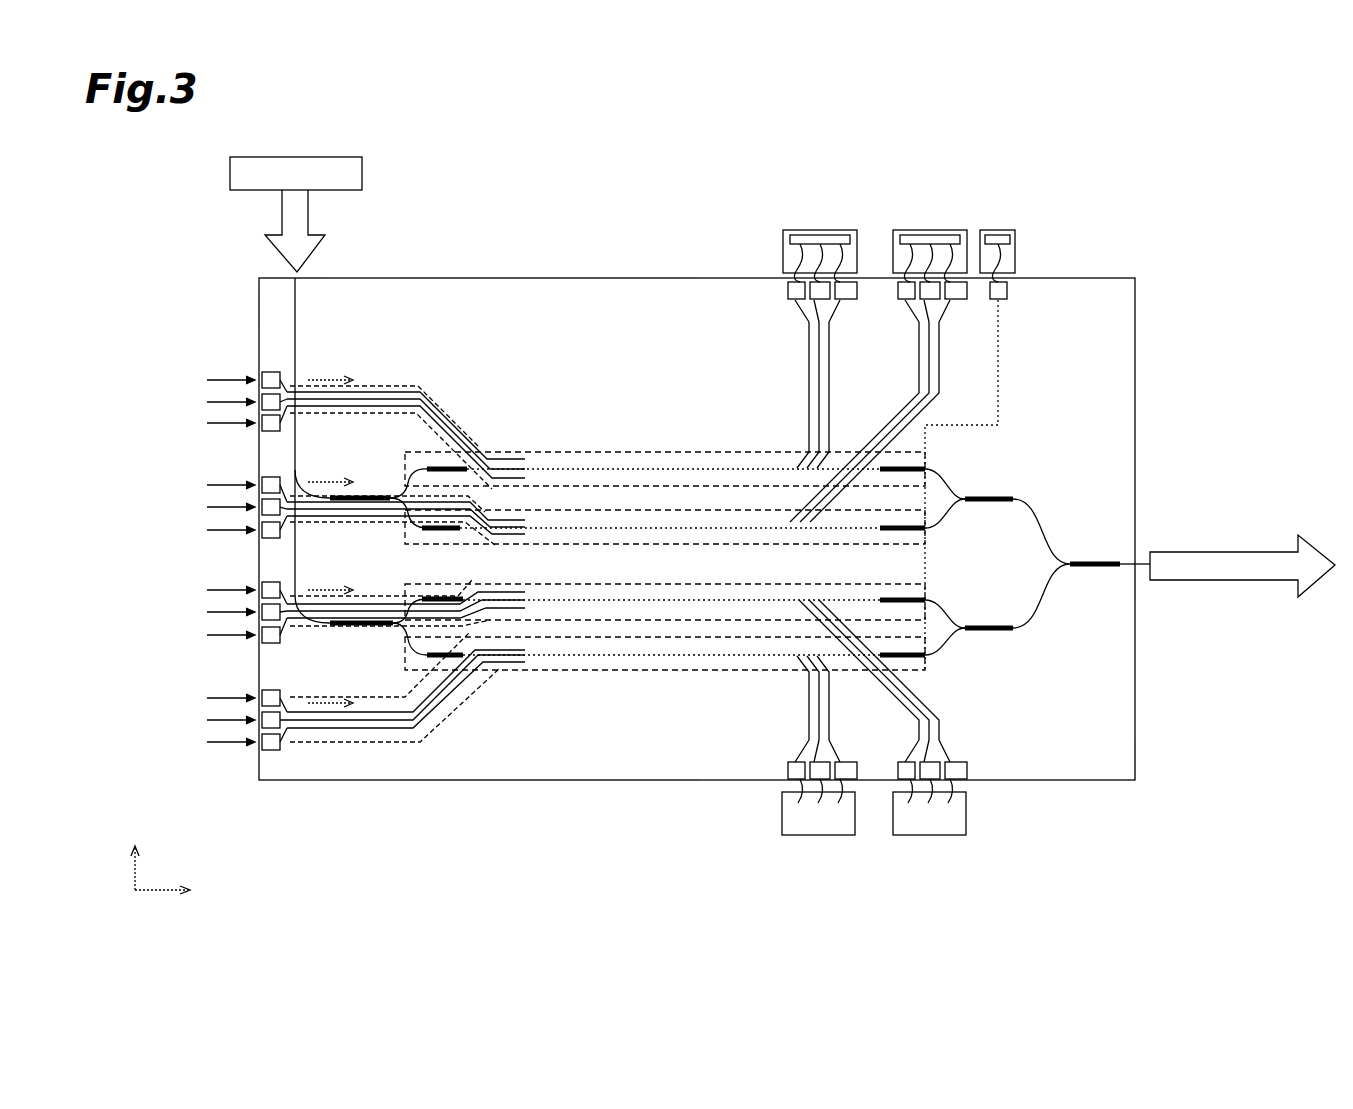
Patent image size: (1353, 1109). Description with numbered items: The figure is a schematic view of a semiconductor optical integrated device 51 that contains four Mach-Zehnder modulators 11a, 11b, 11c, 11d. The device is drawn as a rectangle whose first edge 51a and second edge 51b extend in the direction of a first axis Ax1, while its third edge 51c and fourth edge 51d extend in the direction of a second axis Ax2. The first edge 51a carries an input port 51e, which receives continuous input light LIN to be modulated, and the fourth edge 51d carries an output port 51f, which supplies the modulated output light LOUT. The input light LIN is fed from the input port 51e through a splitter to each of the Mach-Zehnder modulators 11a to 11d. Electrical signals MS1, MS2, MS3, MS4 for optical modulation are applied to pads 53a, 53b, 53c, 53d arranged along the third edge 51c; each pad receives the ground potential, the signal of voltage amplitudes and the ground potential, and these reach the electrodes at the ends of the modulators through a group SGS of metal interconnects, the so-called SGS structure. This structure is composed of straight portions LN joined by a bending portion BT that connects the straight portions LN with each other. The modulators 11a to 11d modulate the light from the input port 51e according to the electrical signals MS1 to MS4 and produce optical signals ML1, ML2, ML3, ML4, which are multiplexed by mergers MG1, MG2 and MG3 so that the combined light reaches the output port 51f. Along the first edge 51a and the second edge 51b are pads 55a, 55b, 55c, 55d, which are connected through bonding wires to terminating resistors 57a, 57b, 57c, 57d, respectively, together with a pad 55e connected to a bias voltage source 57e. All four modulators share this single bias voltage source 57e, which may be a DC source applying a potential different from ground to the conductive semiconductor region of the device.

The optical integrated device 51 is at (1136, 340).
The first edge 51a is at (585, 278).
The second edge 51b is at (606, 780).
The third edge 51c is at (258, 300).
The fourth edge 51d is at (1136, 750).
The input port 51e is at (300, 275).
The output port 51f is at (1136, 568).
The pad 53a is at (260, 376).
The pad 53b is at (260, 484).
The pad 53c is at (260, 590).
The pad 53d is at (260, 698).
The pad 55a is at (852, 300).
The pad 55b is at (962, 300).
The pad 55c is at (968, 762).
The pad 55d is at (785, 758).
The pad 55e is at (1008, 296).
The terminating resistor 57a is at (812, 228).
The terminating resistor 57b is at (922, 228).
The terminating resistor 57c is at (928, 835).
The terminating resistor 57d is at (818, 835).
The bias voltage source 57e is at (996, 228).
The Mach-Zehnder modulator 11a is at (814, 460).
The Mach-Zehnder modulator 11b is at (865, 511).
The Mach-Zehnder modulator 11c is at (832, 588).
The Mach-Zehnder modulator 11d is at (910, 672).
The optical signal ML1 is at (955, 464).
The optical signal ML2 is at (955, 533).
The optical signal ML3 is at (955, 595).
The optical signal ML4 is at (955, 662).
The merger MG1 is at (1000, 494).
The merger MG2 is at (1005, 632).
The merger MG3 is at (1093, 560).
The electrical signal MS1 is at (326, 378).
The electrical signal MS2 is at (326, 480).
The electrical signal MS3 is at (326, 589).
The electrical signal MS4 is at (318, 702).
The straight portion LN is at (394, 398).
The bending portion BT is at (430, 390).
The group of metal interconnects SGS is at (460, 698).
The input light LIN is at (310, 205).
The output light LOUT is at (1183, 545).
The first axis Ax1 is at (187, 892).
The second axis Ax2 is at (133, 853).